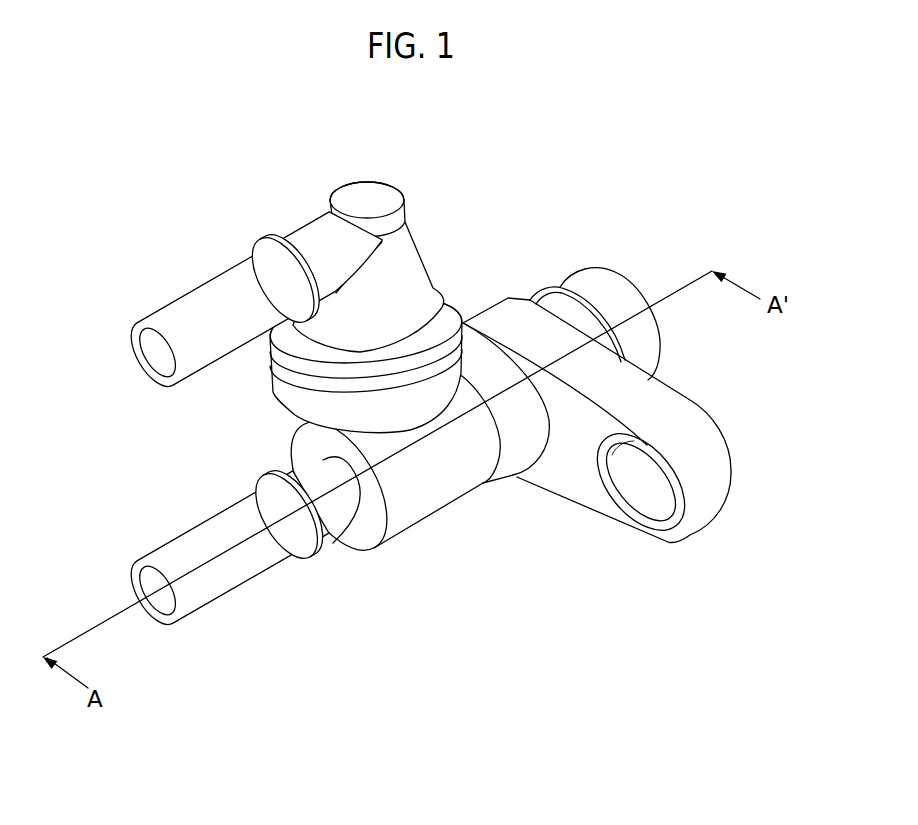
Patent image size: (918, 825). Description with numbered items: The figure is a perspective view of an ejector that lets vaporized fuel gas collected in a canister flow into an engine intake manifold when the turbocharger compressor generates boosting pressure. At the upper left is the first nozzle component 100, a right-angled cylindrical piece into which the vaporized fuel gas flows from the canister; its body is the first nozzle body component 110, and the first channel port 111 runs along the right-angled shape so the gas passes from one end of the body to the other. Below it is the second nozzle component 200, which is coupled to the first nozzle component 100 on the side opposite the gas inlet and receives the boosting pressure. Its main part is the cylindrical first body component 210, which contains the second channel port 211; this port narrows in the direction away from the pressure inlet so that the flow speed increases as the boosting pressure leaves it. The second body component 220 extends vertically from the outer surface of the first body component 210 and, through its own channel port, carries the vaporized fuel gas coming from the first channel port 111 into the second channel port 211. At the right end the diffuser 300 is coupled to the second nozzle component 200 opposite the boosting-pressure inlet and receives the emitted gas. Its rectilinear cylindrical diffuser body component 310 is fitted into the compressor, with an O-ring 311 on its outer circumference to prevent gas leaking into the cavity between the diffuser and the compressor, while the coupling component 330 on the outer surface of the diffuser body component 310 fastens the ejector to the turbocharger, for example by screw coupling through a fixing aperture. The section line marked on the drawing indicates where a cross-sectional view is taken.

The first nozzle component 100 is at (295, 308).
The first nozzle body component 110 is at (400, 272).
The first channel port 111 is at (160, 375).
The second nozzle component 200 is at (311, 512).
The first body component 210 is at (452, 467).
The second channel port 211 is at (160, 600).
The second body component 220 is at (312, 388).
The diffuser 300 is at (607, 406).
The diffuser body component 310 is at (492, 350).
The O-ring 311 is at (573, 308).
The coupling component 330 is at (707, 507).